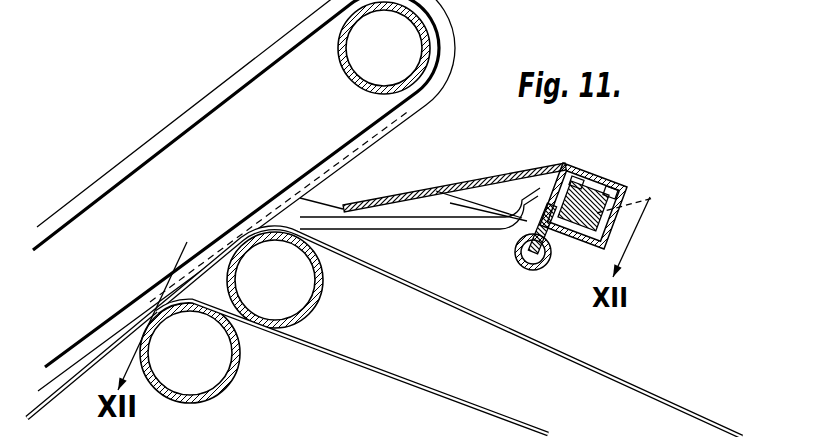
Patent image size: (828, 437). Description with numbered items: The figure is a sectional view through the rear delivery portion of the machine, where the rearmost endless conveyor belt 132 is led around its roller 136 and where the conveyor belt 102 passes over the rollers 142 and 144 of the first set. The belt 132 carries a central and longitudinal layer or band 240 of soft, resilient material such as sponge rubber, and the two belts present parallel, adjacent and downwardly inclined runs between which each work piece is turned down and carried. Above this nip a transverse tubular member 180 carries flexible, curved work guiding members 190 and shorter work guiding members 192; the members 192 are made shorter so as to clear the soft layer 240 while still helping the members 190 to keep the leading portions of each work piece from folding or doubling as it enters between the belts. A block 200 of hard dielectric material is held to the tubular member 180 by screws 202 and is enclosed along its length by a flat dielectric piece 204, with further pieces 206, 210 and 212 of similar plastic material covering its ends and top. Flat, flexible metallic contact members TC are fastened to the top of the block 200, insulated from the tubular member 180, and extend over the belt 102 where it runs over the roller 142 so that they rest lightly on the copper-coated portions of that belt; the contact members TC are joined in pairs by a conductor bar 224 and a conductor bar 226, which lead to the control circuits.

The conveyor belt 102 is at (622, 380).
The rearmost endless conveyor belt 132 is at (250, 83).
The roller 136 is at (360, 88).
The roller 142 is at (312, 312).
The roller 144 is at (232, 382).
The transverse tubular member 180 is at (517, 254).
The work guiding member 190 is at (215, 247).
The work guiding member 192 is at (415, 217).
The block of hard dielectric material 200 is at (573, 252).
The screw 202 is at (540, 266).
The flat piece of dielectric material 204 is at (630, 222).
The piece of dielectric material 206 is at (480, 193).
The piece of dielectric material 210 is at (600, 164).
The piece of dielectric material 212 is at (493, 170).
The conductor bar 224 is at (567, 166).
The conductor bar 226 is at (620, 183).
The layer or band of soft resilient material 240 is at (208, 100).
The flat flexible metallic contact member TC is at (360, 230).